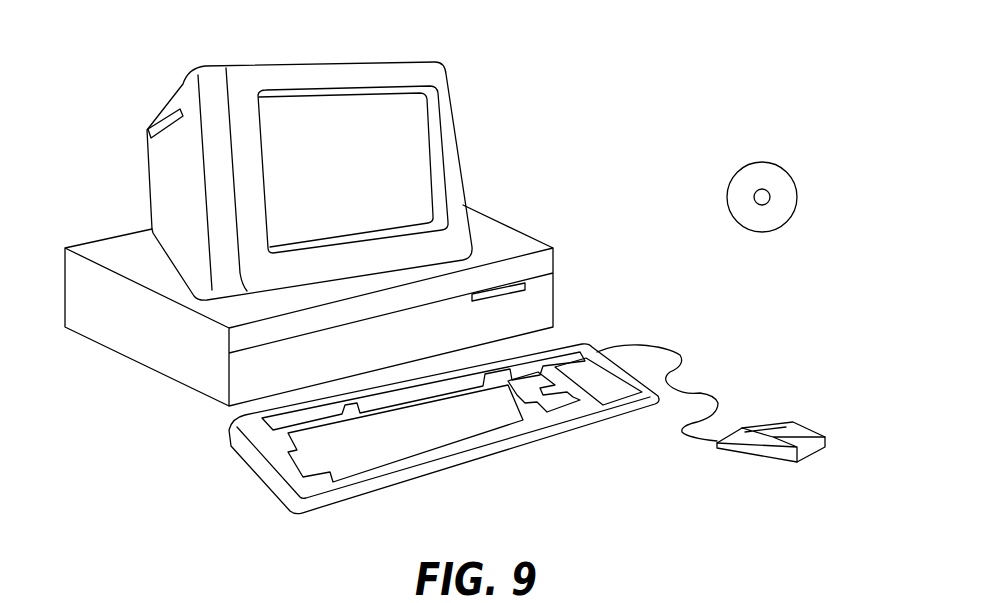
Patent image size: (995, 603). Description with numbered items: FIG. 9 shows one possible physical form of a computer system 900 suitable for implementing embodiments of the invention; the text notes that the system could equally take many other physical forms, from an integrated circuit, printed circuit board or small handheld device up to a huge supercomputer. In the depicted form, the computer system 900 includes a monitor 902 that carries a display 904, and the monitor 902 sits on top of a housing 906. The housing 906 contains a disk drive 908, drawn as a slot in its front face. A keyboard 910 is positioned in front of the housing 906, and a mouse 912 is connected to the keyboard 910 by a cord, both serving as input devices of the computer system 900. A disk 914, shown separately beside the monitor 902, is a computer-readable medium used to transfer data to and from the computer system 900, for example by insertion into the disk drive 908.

The computer system 900 is at (681, 49).
The monitor 902 is at (466, 186).
The display 904 is at (423, 127).
The housing 906 is at (150, 240).
The disk drive 908 is at (525, 283).
The keyboard 910 is at (455, 471).
The mouse 912 is at (793, 422).
The disk 914 is at (777, 165).